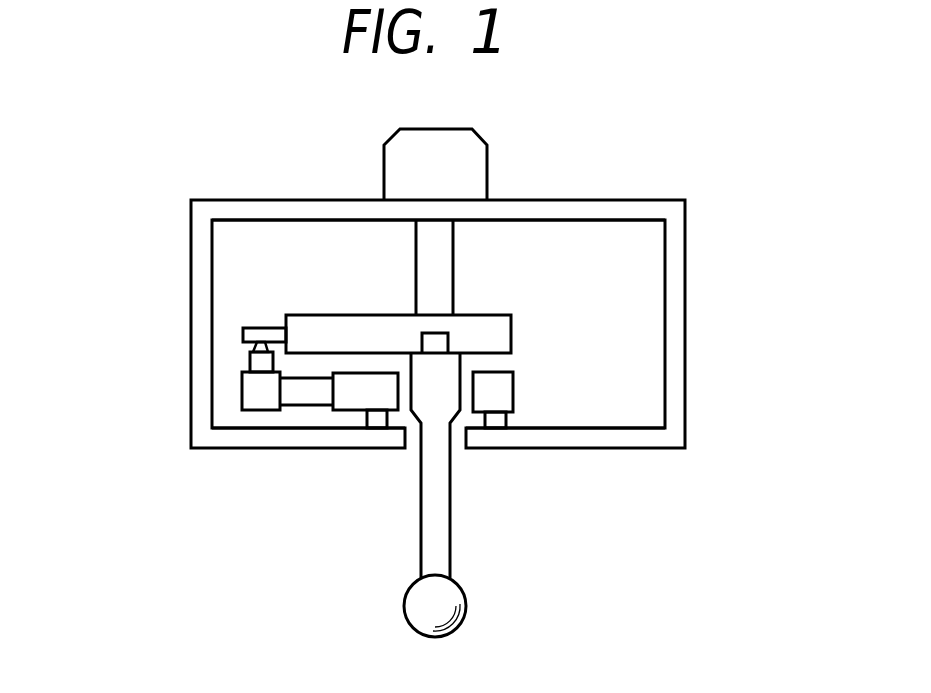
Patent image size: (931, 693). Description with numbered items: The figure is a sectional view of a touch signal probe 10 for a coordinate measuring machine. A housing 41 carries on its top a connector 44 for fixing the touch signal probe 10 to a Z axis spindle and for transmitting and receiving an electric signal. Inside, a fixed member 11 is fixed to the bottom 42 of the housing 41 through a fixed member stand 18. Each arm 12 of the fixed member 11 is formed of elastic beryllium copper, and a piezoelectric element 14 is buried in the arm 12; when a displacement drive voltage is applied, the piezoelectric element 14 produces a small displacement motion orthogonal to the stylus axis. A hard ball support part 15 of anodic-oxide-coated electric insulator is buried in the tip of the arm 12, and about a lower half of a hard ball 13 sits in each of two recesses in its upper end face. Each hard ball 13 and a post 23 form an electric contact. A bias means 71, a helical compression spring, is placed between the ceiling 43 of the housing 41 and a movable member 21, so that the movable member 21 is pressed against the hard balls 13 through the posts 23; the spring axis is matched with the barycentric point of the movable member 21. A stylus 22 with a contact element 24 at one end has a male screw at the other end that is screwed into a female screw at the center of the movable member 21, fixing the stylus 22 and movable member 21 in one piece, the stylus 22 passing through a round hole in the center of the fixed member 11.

The touch signal probe 10 is at (720, 170).
The fixed member 11 is at (345, 403).
The arm 12 is at (262, 410).
The hard ball 13 is at (253, 349).
The piezoelectric element 14 is at (318, 407).
The hard ball support part 15 is at (250, 358).
The fixed member stand 18 is at (378, 425).
The movable member 21 is at (513, 326).
The stylus 22 is at (443, 548).
The post 23 is at (266, 327).
The contact element 24 is at (455, 605).
The housing 41 is at (686, 252).
The bottom 42 is at (633, 427).
The ceiling 43 is at (343, 222).
The connector 44 is at (480, 140).
The bias means 71 is at (448, 255).